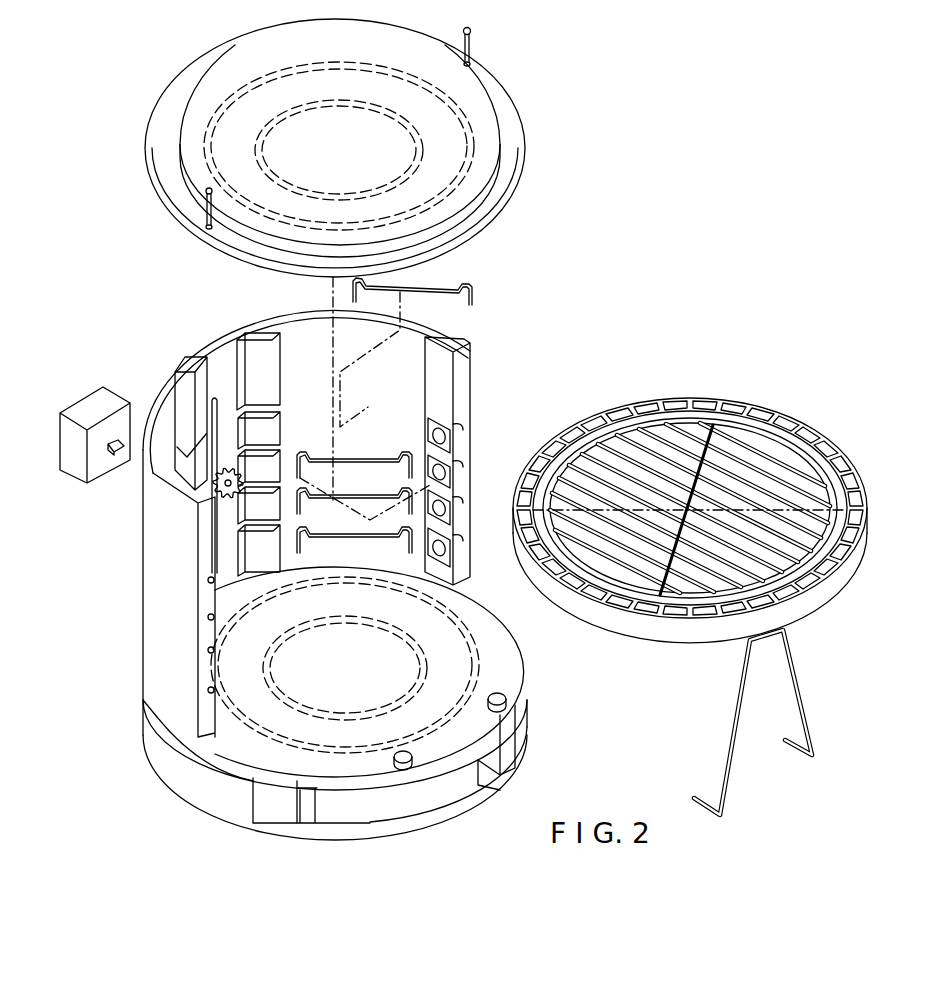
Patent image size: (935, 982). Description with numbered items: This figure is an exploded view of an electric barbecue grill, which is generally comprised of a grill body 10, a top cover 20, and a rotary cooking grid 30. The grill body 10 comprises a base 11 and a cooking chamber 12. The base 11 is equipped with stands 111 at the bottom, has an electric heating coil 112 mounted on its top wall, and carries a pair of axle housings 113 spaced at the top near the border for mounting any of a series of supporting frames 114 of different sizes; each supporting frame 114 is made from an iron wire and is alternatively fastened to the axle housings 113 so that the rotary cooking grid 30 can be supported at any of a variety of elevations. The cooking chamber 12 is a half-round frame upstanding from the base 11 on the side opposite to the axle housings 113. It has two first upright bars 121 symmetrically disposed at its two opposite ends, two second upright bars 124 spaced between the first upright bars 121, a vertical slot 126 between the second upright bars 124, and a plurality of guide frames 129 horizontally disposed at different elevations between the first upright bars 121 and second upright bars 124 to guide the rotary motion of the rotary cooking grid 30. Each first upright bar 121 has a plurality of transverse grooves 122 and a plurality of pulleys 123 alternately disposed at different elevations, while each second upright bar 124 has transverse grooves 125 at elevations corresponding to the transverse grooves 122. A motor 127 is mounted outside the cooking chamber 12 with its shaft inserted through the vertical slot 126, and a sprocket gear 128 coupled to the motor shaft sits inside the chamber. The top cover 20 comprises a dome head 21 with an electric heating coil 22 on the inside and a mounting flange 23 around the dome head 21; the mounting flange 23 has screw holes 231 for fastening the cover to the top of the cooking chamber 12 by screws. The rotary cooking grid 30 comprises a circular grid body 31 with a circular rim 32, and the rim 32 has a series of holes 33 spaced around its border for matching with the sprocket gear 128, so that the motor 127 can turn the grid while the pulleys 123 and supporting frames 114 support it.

The grill body 10 is at (138, 556).
The base 11 is at (335, 767).
The stands 111 is at (248, 826).
The electric heating coil 112 is at (343, 747).
The axle housings 113 is at (405, 763).
The supporting frames 114 is at (790, 648).
The cooking chamber 12 is at (157, 527).
The first upright bars 121 is at (472, 341).
The transverse grooves 122 is at (467, 420).
The pulleys 123 is at (468, 458).
The second upright bars 124 is at (273, 428).
The transverse grooves 125 is at (277, 414).
The vertical slot 126 is at (216, 398).
The motor 127 is at (105, 393).
The sprocket gear 128 is at (175, 470).
The guide frames 129 is at (455, 290).
The top cover 20 is at (532, 142).
The dome head 21 is at (227, 76).
The electric heating coil 22 is at (470, 113).
The mounting flange 23 is at (497, 180).
The screw holes 231 is at (470, 64).
The rotary cooking grid 30 is at (760, 402).
The circular grid body 31 is at (797, 442).
The circular rim 32 is at (858, 478).
The holes 33 is at (867, 512).